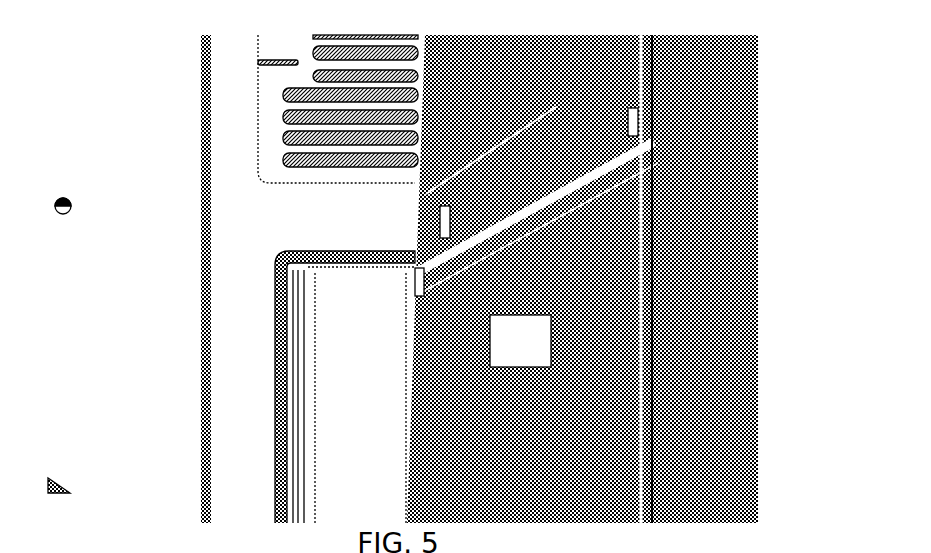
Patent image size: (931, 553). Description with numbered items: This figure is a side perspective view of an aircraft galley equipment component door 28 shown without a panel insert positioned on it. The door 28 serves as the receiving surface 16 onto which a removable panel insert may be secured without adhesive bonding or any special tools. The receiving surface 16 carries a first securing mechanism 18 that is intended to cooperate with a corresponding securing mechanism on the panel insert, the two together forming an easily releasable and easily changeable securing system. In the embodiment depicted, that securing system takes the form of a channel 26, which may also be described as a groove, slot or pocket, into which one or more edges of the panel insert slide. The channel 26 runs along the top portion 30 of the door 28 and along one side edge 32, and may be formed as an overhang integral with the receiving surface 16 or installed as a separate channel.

The receiving surface 16 is at (499, 343).
The first securing mechanism 18 is at (578, 185).
The channel 26 is at (410, 269).
The galley component door 28 is at (333, 397).
The top portion 30 is at (493, 218).
The side edge 32 is at (640, 325).